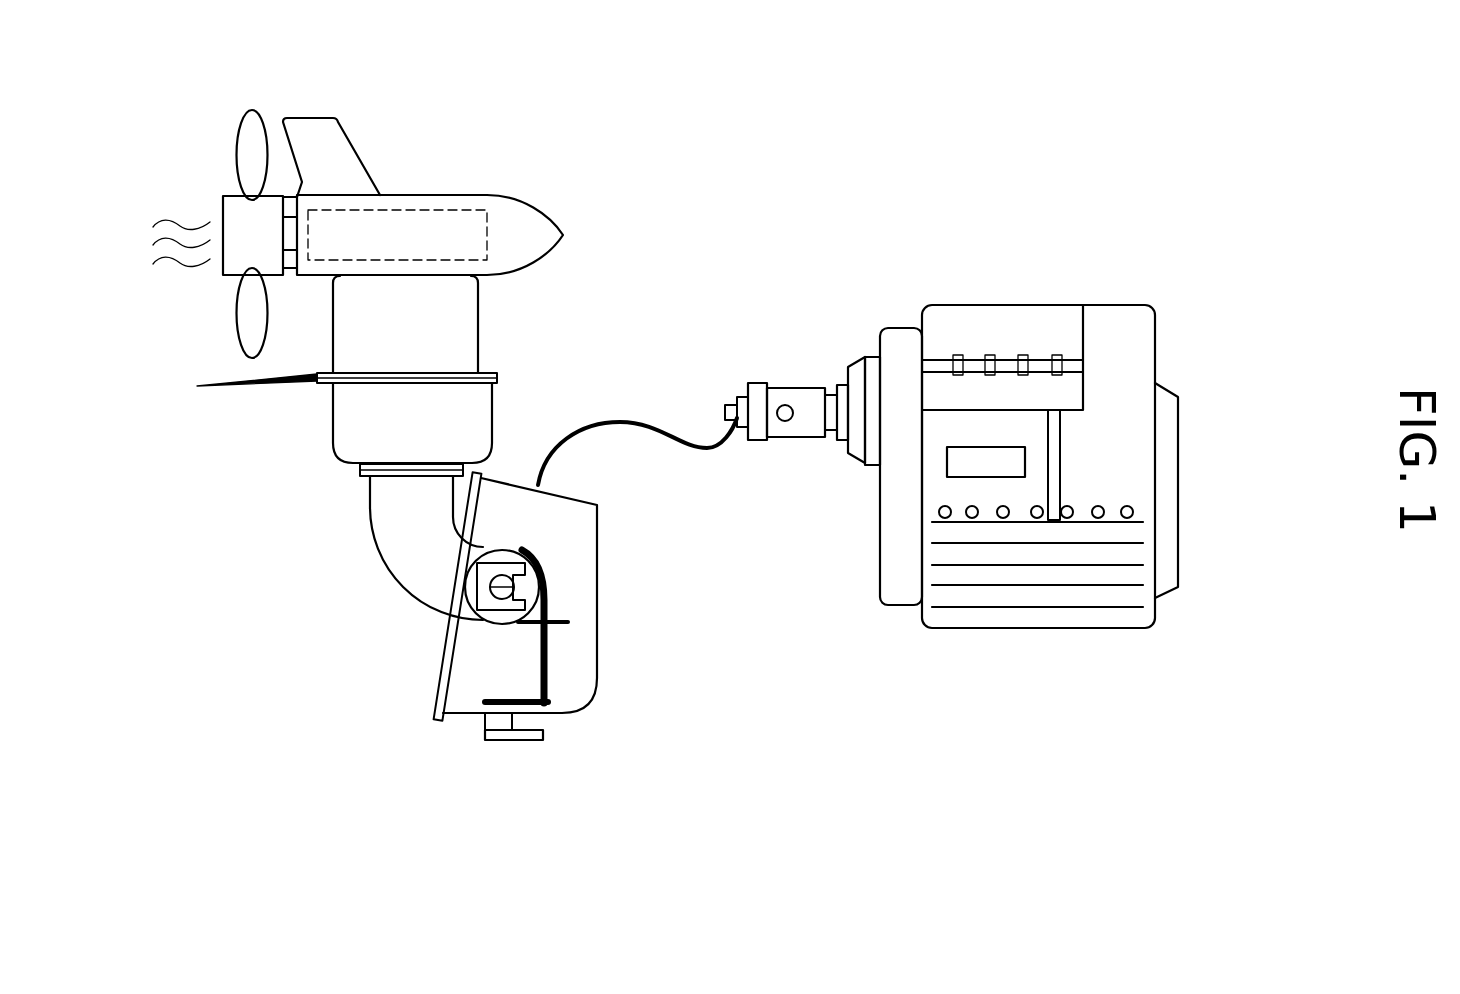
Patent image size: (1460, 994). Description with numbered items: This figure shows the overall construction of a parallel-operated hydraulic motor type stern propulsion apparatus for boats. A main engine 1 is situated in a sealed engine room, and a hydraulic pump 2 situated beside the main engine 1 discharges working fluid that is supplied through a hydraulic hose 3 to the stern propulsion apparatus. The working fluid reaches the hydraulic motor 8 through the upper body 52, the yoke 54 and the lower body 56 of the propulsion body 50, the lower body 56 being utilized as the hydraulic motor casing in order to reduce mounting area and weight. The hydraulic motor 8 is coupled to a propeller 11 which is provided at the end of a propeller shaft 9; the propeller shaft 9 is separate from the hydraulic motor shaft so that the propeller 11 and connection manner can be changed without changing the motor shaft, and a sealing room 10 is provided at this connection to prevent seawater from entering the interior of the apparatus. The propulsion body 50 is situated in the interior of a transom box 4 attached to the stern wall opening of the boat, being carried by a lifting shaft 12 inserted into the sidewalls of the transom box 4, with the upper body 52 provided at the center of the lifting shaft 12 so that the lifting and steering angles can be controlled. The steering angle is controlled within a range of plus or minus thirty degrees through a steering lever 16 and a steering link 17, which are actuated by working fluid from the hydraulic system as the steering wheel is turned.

The main engine 1 is at (1019, 535).
The hydraulic pump 2 is at (753, 443).
The cable 3 is at (623, 418).
The transom box 4 is at (598, 660).
The hydraulic motor 8 is at (460, 210).
The propeller shaft 9 is at (293, 227).
The sealing room 10 is at (287, 197).
The propeller 11 is at (237, 163).
The lifting shaft 12 is at (500, 587).
The steering lever 16 is at (515, 742).
The steering link 17 is at (547, 667).
The propulsion body 50 is at (307, 448).
The upper body 52 is at (410, 560).
The yoke 54 is at (360, 450).
The lower body 56 is at (347, 340).